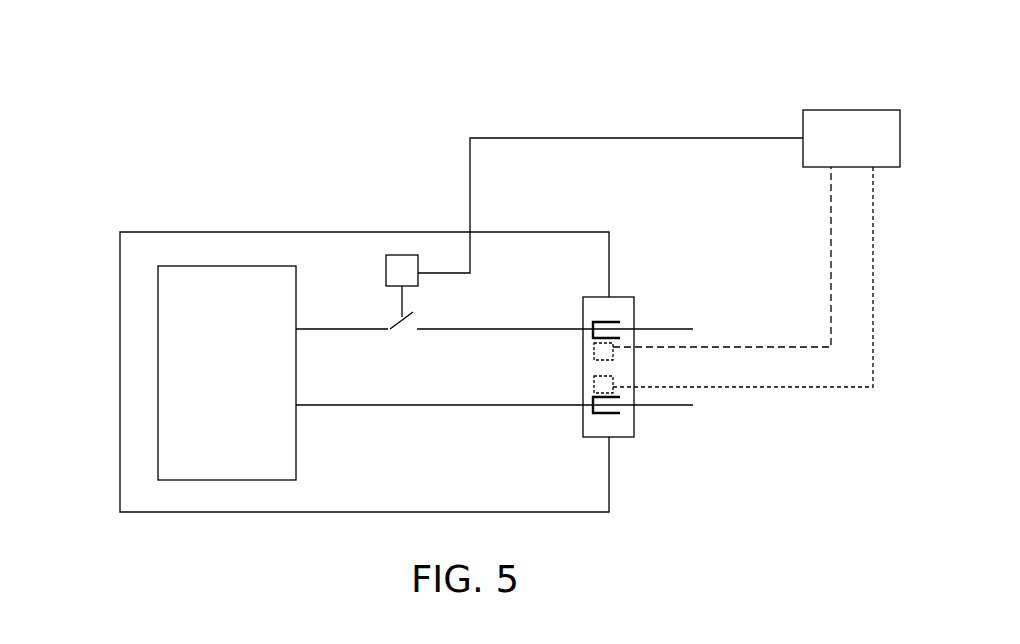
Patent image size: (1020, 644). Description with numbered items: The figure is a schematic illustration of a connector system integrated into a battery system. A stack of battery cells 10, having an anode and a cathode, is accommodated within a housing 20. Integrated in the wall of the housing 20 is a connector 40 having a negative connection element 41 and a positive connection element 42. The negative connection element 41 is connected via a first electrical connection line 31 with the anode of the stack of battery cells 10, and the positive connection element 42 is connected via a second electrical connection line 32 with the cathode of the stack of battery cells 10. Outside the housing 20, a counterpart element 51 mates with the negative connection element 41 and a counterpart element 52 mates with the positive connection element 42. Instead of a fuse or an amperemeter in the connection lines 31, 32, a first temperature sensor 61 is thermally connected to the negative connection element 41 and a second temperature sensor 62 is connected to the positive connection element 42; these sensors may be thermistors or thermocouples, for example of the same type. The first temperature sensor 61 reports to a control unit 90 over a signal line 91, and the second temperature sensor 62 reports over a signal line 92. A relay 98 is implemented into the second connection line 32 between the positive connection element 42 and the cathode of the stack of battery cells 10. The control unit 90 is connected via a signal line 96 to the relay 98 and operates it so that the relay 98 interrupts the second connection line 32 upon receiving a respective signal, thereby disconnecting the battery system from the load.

The stack of battery cells 10 is at (158, 372).
The housing 20 is at (200, 232).
The first electrical connection line 31 is at (362, 407).
The second electrical connection line 32 is at (540, 329).
The connector 40 is at (583, 424).
The negative connection element 41 is at (608, 414).
The positive connection element 42 is at (608, 322).
The counterpart element of the negative connection element 51 is at (683, 407).
The counterpart element of the positive connection element 52 is at (672, 329).
The first temperature sensor 61 is at (583, 385).
The second temperature sensor 62 is at (583, 347).
The control unit 90 is at (852, 110).
The signal line 91 is at (852, 388).
The signal line 92 is at (808, 345).
The signal line 96 is at (637, 138).
The relay 98 is at (400, 255).